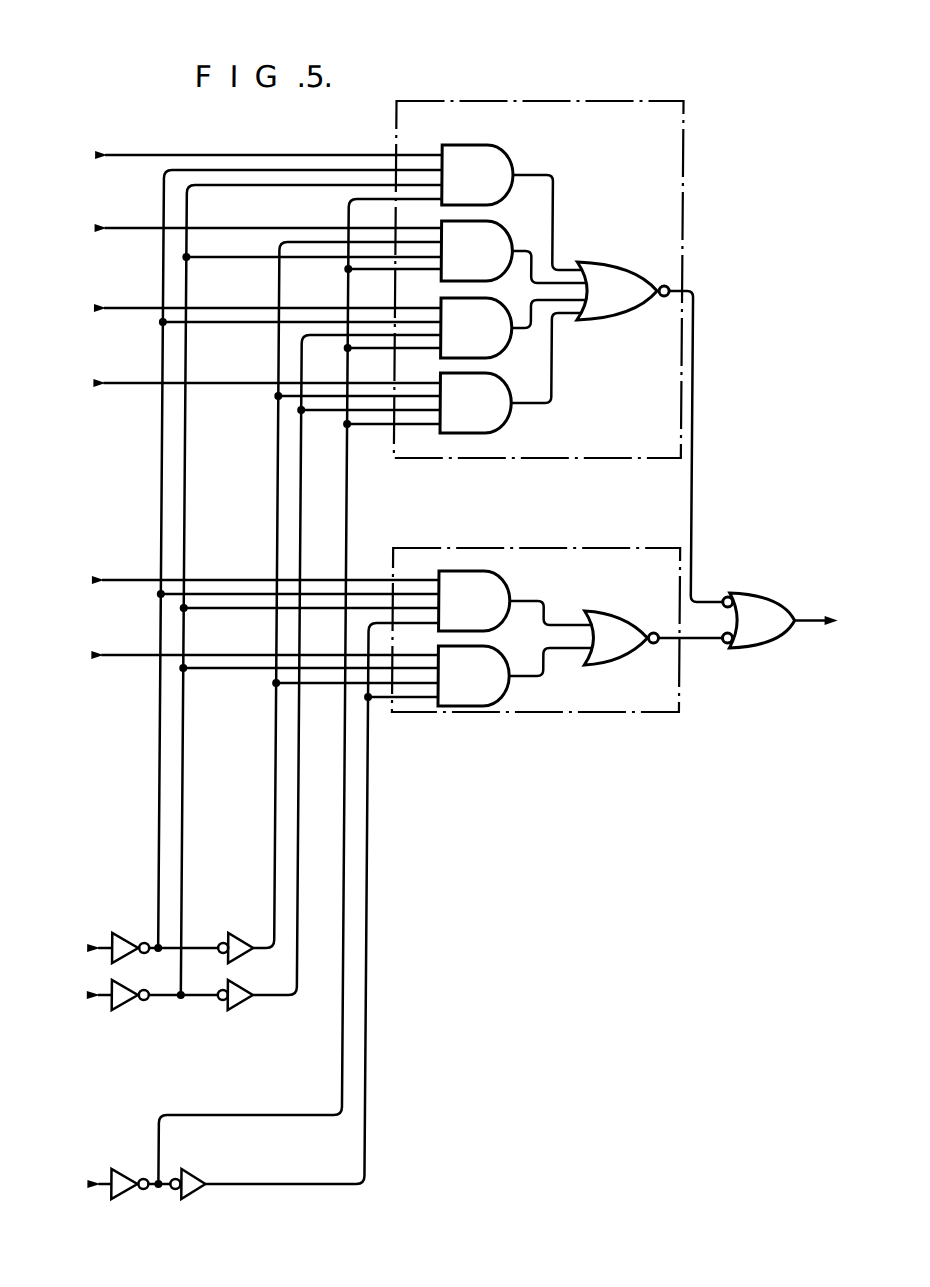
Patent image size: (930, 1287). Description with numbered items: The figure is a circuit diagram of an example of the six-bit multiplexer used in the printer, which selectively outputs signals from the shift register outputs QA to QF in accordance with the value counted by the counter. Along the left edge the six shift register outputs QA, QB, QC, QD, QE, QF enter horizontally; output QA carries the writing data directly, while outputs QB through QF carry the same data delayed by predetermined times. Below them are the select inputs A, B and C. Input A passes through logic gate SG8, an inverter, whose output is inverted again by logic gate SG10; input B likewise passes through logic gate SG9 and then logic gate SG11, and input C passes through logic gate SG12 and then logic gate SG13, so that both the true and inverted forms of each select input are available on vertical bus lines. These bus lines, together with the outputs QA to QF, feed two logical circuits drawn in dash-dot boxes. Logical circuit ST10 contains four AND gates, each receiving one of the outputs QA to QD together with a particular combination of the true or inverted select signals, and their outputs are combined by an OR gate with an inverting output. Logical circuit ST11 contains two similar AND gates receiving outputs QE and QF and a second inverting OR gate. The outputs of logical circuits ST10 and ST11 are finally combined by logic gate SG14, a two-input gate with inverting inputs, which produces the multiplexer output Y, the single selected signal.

The logical circuit ST10 is at (539, 267).
The logical circuit ST11 is at (536, 617).
The logic gate SG8 is at (125, 936).
The logic gate SG9 is at (120, 986).
The logic gate SG10 is at (237, 936).
The logic gate SG11 is at (239, 986).
The logic gate SG12 is at (123, 1172).
The logic gate SG13 is at (192, 1172).
The logic gate SG14 is at (758, 608).
The shift register output QA is at (249, 156).
The shift register output QB is at (248, 229).
The shift register output QC is at (249, 309).
The shift register output QD is at (248, 384).
The shift register output QE is at (247, 581).
The shift register output QF is at (247, 656).
The select input A is at (84, 949).
The select input B is at (84, 996).
The select input C is at (85, 1185).
The multiplexer output Y is at (819, 610).